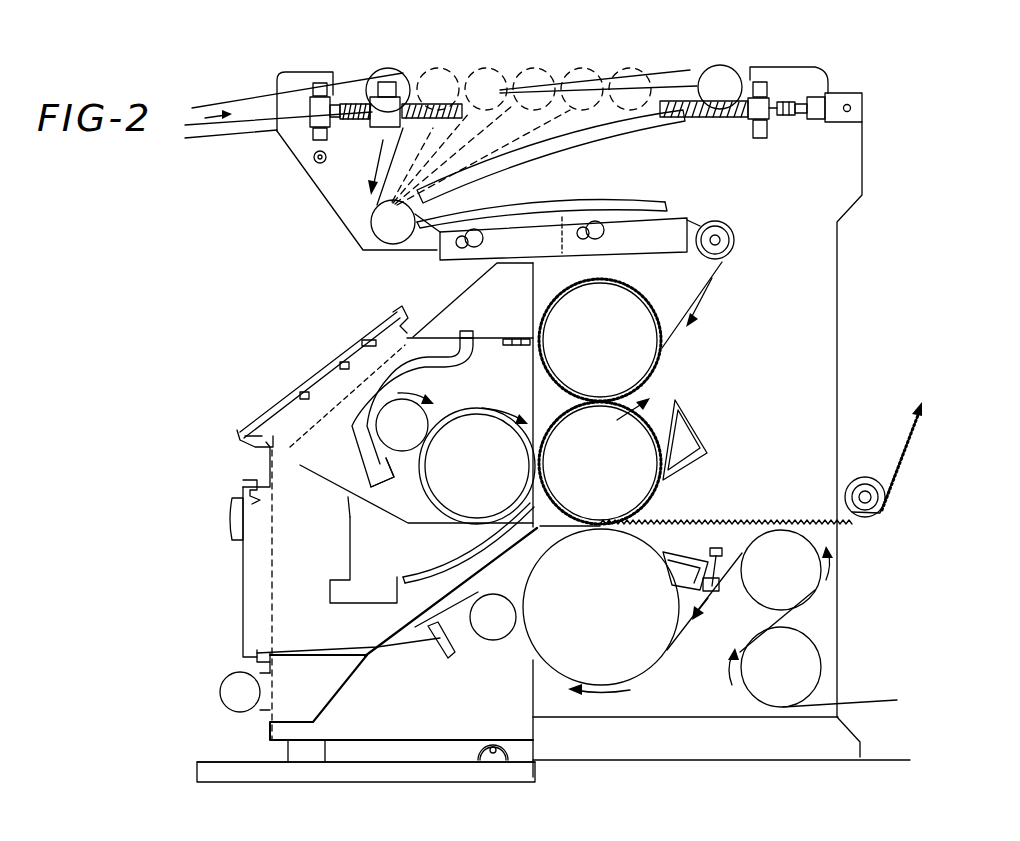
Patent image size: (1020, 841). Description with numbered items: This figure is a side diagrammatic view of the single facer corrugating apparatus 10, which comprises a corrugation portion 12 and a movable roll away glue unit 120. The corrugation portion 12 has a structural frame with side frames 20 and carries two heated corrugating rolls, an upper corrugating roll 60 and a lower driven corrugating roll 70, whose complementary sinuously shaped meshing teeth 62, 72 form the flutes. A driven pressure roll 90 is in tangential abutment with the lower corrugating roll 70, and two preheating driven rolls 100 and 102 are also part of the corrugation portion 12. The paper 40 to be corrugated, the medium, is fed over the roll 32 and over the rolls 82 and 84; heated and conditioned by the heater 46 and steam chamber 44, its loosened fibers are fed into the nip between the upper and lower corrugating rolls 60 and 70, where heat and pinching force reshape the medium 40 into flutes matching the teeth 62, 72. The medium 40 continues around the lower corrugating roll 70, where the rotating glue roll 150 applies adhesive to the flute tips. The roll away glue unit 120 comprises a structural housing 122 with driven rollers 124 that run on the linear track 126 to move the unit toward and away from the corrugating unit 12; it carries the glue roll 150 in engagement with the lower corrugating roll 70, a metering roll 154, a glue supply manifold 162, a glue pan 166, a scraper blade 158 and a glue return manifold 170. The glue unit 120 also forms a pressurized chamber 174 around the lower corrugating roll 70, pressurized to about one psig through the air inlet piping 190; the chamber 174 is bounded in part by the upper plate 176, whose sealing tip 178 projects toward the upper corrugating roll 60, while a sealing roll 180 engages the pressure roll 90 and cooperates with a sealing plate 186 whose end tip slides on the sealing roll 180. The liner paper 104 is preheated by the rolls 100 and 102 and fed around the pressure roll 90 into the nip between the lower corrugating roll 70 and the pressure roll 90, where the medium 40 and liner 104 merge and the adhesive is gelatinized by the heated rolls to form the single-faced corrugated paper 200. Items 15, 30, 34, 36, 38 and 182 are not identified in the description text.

The single facer corrugating apparatus 10 is at (322, 62).
The corrugation portion 12 is at (850, 298).
The guide 15 is at (541, 196).
The side frames 20 is at (612, 178).
The feed roller 30 is at (395, 62).
The roll 32 is at (405, 74).
The roller 34 is at (383, 128).
The threaded shaft 36 is at (720, 117).
The block 38 is at (862, 106).
The paper 40 is at (218, 108).
The steam chamber 44 is at (440, 263).
The heater 46 is at (625, 128).
The upper corrugating roll 60 is at (662, 348).
The meshing teeth 62 is at (590, 282).
The lower corrugating roll 70 is at (663, 483).
The meshing teeth 72 is at (660, 512).
The roll 82 is at (390, 240).
The roll 84 is at (722, 240).
The pressure roll 90 is at (633, 663).
The preheating driven roll 100 is at (807, 593).
The preheating driven roll 102 is at (807, 665).
The liner paper 104 is at (897, 700).
The roll away glue unit 120 is at (240, 597).
The structural housing 122 is at (270, 472).
The driven rollers 124 is at (510, 755).
The linear track 126 is at (383, 765).
The glue roll 150 is at (498, 477).
The metering roll 154 is at (446, 404).
The scraper blade 158 is at (412, 460).
The glue supply manifold 162 is at (330, 395).
The glue pan 166 is at (347, 497).
The glue return manifold 170 is at (330, 598).
The pressurized chamber 174 is at (297, 637).
The upper plate 176 is at (470, 325).
The sealing tip 178 is at (513, 337).
The sealing roll 180 is at (493, 634).
The guide 182 is at (467, 599).
The sealing plate 186 is at (377, 640).
The air inlet piping 190 is at (235, 697).
The single-faced corrugated paper 200 is at (920, 450).